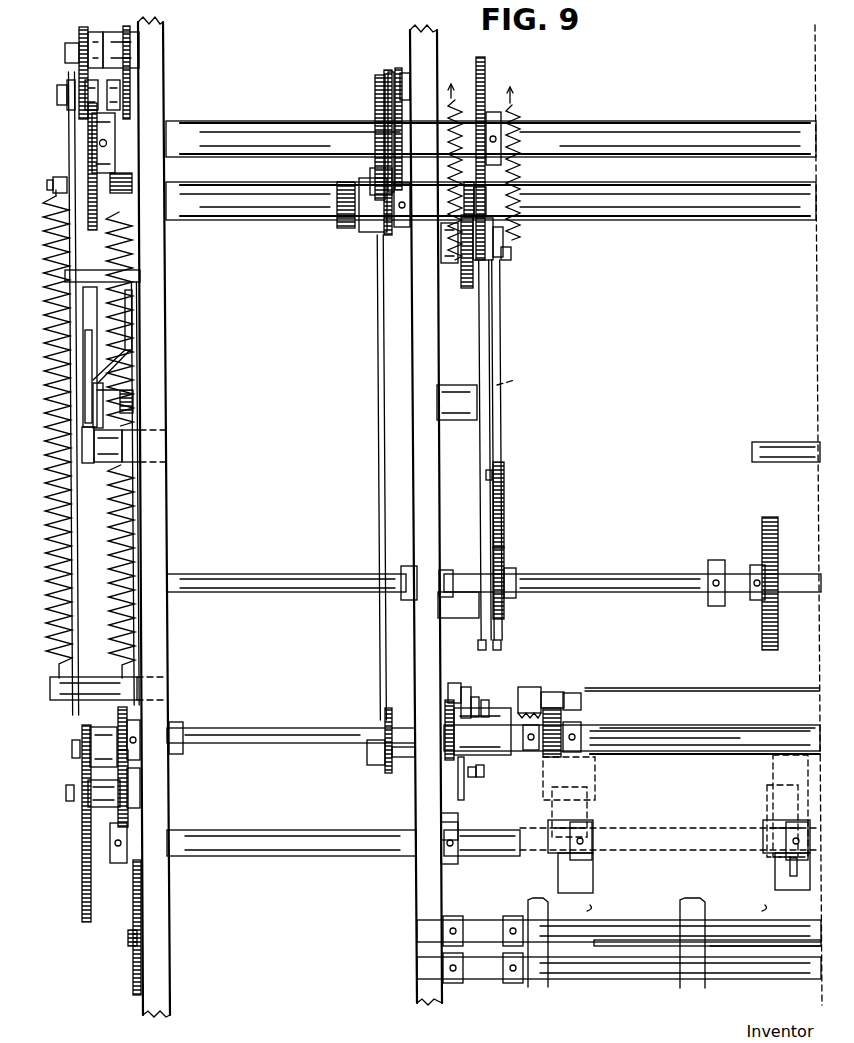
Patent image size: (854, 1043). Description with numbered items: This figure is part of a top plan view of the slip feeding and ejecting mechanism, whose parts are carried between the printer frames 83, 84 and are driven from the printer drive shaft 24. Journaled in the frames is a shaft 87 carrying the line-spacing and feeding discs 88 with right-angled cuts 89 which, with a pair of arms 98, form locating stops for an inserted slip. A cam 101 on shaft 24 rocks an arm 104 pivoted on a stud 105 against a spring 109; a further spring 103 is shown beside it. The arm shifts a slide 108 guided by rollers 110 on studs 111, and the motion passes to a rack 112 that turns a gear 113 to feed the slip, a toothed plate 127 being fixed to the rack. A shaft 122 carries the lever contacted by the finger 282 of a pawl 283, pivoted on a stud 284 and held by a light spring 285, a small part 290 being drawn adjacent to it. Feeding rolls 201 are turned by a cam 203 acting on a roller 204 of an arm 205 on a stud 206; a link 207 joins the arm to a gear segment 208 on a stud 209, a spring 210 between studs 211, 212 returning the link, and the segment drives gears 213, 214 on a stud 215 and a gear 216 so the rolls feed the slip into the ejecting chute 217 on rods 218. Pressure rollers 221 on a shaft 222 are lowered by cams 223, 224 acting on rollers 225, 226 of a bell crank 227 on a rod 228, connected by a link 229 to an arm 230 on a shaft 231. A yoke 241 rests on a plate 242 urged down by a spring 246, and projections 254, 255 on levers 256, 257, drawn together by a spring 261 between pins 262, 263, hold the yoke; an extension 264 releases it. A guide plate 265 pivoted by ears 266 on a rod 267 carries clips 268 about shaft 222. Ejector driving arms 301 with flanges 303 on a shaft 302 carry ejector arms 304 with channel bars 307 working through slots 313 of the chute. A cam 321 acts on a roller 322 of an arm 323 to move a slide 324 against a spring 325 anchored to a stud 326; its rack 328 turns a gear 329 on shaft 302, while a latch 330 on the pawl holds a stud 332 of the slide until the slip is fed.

The printer drive shaft 24 is at (582, 123).
The printer frame 83 is at (167, 652).
The printer frame 84 is at (432, 456).
The shaft 87 is at (622, 574).
The line-spacing and feeding disc 88 is at (765, 534).
The right-angled cut 89 is at (776, 578).
The arm 98 is at (710, 561).
The cam 101 is at (486, 66).
The spring 103 is at (515, 106).
The arm 104 is at (487, 282).
The stud 105 is at (445, 265).
The slide 108 is at (486, 322).
The spring 109 is at (456, 100).
The roller 110 is at (508, 606).
The stud 111 is at (461, 388).
The rack 112 is at (502, 447).
The gear 113 is at (504, 542).
The shaft 122 is at (788, 442).
The plate 127 is at (494, 478).
The feeding roll 201 is at (563, 716).
The cam 203 is at (88, 134).
The roller 204 is at (62, 96).
The arm 205 is at (80, 27).
The stud 206 is at (65, 43).
The link 207 is at (68, 158).
The gear segment 208 is at (82, 912).
The stud 209 is at (71, 749).
The spring 210 is at (60, 548).
The stud 211 is at (52, 184).
The stud 212 is at (66, 700).
The gear 213 is at (84, 812).
The gear 214 is at (128, 823).
The stud 215 is at (129, 784).
The gear 216 is at (128, 714).
The ejecting chute 217 is at (684, 744).
The rod 218 is at (578, 945).
The pressure roller 221 is at (581, 728).
The shaft 222 is at (600, 744).
The cam 223 is at (387, 70).
The cam 224 is at (375, 113).
The roller 225 is at (400, 70).
The roller 226 is at (368, 175).
The bell crank 227 is at (388, 92).
The rod 228 is at (304, 220).
The link 229 is at (377, 368).
The arm 230 is at (386, 766).
The shaft 231 is at (408, 758).
The yoke 241 is at (523, 688).
The plate 242 is at (471, 648).
The spring 246 is at (457, 684).
The projection 254 is at (482, 766).
The projection 255 is at (458, 721).
The lever 256 is at (464, 802).
The lever 257 is at (469, 688).
The spring 261 is at (487, 708).
The pin 262 is at (472, 776).
The pin 263 is at (477, 698).
The extension 264 is at (444, 828).
The guide plate 265 is at (671, 690).
The ear 266 is at (556, 693).
The rod 267 is at (579, 696).
The clip 268 is at (754, 732).
The finger 282 is at (92, 335).
The pawl 283 is at (98, 298).
The stud 284 is at (132, 442).
The spring 285 is at (80, 282).
The slide 290 is at (100, 385).
The ejector driving arm 301 is at (790, 866).
The shaft 302 is at (192, 852).
The flange 303 is at (584, 770).
The ejector arm 304 is at (592, 862).
The channel bar 307 is at (578, 824).
The slot 313 is at (676, 907).
The cam 321 is at (116, 135).
The roller 322 is at (121, 95).
The arm 323 is at (126, 27).
The slide 324 is at (139, 477).
The spring 325 is at (128, 246).
The stud 326 is at (133, 183).
The rack 328 is at (128, 940).
The gear 329 is at (132, 864).
The latch 330 is at (133, 310).
The stud 332 is at (134, 400).